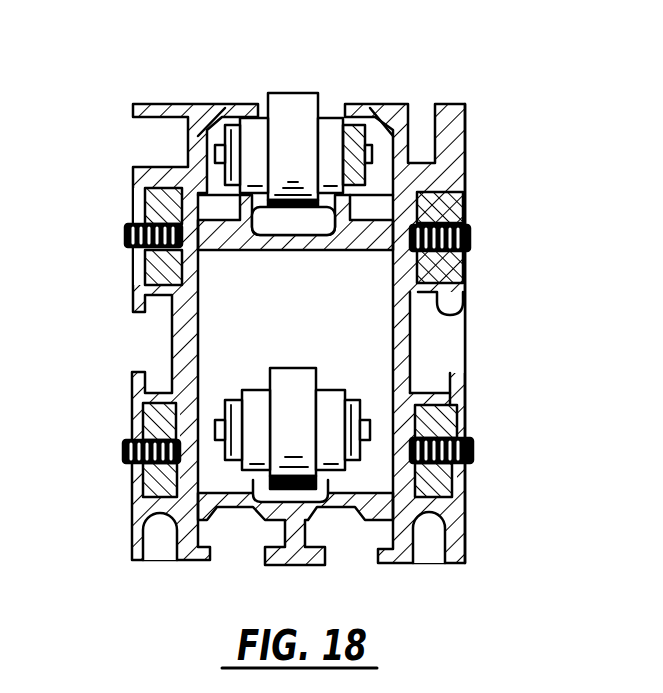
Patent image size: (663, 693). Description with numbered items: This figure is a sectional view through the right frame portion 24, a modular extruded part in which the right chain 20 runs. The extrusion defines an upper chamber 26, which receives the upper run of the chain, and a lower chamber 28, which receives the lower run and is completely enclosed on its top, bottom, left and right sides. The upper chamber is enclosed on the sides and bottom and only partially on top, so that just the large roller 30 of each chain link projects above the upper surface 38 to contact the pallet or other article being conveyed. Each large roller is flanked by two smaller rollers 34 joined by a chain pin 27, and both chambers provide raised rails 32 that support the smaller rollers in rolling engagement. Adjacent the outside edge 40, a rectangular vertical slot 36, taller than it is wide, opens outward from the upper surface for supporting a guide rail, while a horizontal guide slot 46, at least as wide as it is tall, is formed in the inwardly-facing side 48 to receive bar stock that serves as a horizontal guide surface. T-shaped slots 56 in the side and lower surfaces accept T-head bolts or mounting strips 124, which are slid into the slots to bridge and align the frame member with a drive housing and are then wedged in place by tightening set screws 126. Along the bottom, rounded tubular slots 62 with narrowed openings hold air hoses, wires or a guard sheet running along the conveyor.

The right chain 20 is at (301, 93).
The right frame portion 24 is at (190, 104).
The upper chamber 26 is at (388, 176).
The chain pin 27 is at (368, 420).
The lower chamber 28 is at (392, 344).
The large roller 30 is at (283, 92).
The raised rail 32 is at (229, 212).
The smaller roller 34 is at (250, 118).
The vertical slot 36 is at (421, 104).
The upper surface 38 is at (450, 104).
The outside edge 40 is at (467, 115).
The horizontal guide slot 46 is at (150, 123).
The inwardly-facing side 48 is at (133, 110).
The T-shaped slot 56 is at (153, 188).
The tubular slot 62 is at (173, 552).
The mounting strip 124 is at (134, 212).
The set screw 126 is at (125, 240).